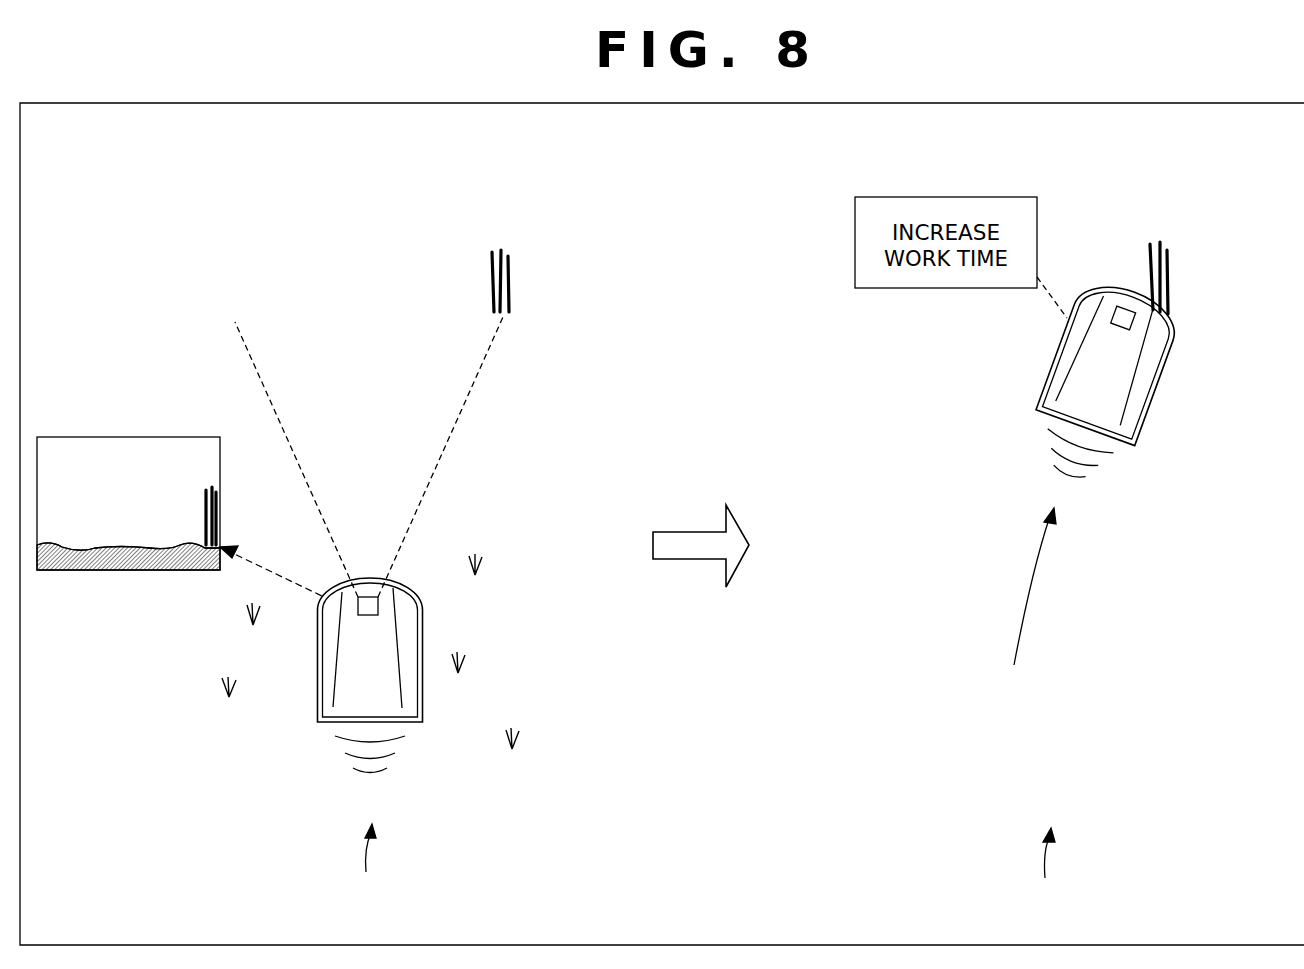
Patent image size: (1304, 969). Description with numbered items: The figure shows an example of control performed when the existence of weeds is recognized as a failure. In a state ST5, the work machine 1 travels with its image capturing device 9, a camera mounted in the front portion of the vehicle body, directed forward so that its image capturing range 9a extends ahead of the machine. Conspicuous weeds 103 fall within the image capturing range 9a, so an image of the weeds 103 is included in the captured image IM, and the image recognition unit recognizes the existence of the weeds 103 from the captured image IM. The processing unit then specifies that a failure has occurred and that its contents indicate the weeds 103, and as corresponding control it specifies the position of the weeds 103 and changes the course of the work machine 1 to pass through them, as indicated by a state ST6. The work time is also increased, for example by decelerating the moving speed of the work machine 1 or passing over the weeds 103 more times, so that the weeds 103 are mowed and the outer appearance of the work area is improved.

The work machine 1 is at (332, 724).
The image capturing device 9 is at (368, 617).
The image capturing range 9a is at (466, 396).
The weeds 103 is at (493, 242).
The captured image IM is at (97, 437).
The state ST5 is at (366, 864).
The state ST6 is at (1045, 869).